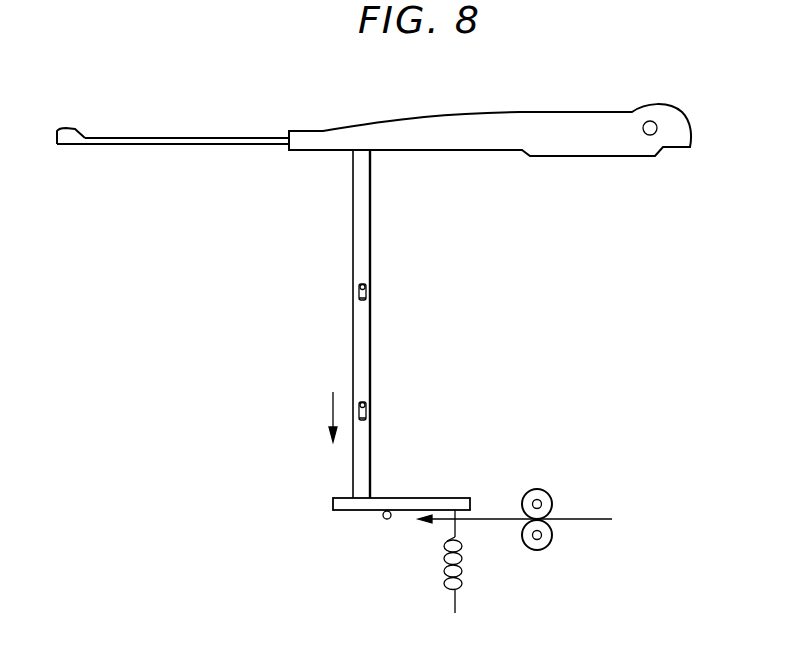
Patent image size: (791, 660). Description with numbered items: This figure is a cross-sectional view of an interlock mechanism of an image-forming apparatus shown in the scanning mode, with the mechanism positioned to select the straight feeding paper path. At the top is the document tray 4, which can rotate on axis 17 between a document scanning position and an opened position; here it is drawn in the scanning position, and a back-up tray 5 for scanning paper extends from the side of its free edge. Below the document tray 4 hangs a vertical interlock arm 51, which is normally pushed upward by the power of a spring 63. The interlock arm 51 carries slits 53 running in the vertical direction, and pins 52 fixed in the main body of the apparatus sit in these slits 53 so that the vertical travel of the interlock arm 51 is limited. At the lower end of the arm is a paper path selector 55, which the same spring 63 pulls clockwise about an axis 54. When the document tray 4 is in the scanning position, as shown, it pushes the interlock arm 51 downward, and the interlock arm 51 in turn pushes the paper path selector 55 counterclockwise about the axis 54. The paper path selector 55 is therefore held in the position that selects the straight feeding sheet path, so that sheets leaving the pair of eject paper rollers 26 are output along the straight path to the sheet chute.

The document tray 4 is at (473, 118).
The back-up tray 5 is at (241, 137).
The axis 17 is at (652, 121).
The eject paper rollers 26 is at (550, 494).
The interlock arm 51 is at (370, 222).
The pins 52 is at (366, 287).
The slits 53 is at (366, 300).
The axis 54 is at (383, 520).
The paper path selector 55 is at (440, 497).
The spring 63 is at (462, 565).